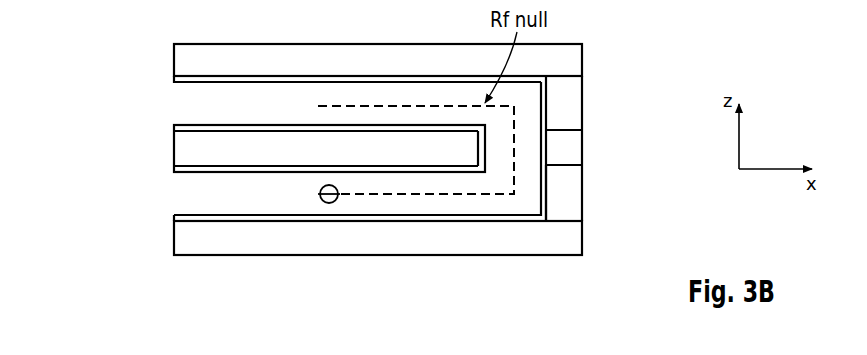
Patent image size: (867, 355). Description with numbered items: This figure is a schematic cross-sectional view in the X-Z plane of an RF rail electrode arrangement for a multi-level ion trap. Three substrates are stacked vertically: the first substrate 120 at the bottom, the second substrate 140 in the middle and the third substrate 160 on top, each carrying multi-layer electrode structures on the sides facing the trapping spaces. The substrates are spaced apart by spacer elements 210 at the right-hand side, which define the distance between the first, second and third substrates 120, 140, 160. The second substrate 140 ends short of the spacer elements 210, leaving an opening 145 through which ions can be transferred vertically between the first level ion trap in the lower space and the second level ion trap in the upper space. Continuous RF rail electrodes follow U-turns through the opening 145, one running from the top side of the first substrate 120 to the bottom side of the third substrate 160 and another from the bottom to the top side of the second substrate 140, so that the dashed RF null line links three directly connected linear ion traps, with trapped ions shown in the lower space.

The third substrate 160 is at (185, 63).
The second substrate 140 is at (185, 147).
The first substrate 120 is at (183, 244).
The spacer elements 210 is at (573, 97).
The opening 145 is at (532, 178).